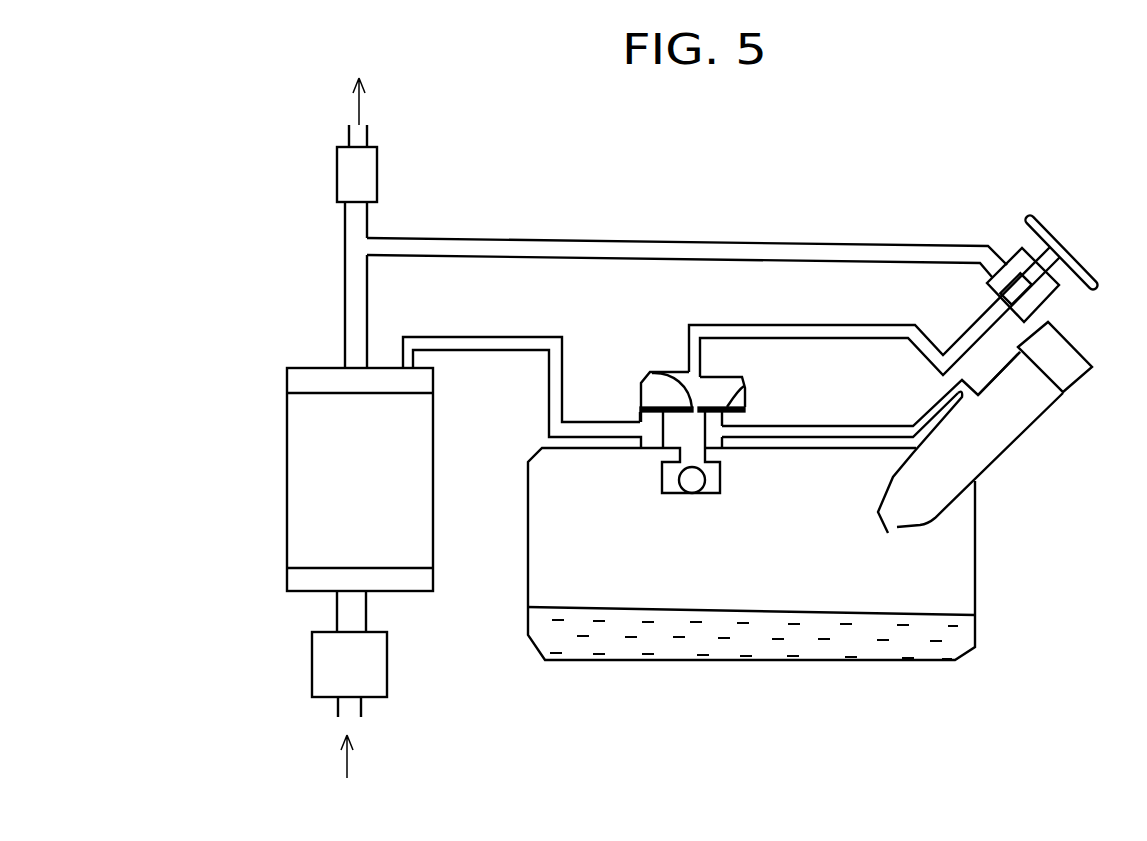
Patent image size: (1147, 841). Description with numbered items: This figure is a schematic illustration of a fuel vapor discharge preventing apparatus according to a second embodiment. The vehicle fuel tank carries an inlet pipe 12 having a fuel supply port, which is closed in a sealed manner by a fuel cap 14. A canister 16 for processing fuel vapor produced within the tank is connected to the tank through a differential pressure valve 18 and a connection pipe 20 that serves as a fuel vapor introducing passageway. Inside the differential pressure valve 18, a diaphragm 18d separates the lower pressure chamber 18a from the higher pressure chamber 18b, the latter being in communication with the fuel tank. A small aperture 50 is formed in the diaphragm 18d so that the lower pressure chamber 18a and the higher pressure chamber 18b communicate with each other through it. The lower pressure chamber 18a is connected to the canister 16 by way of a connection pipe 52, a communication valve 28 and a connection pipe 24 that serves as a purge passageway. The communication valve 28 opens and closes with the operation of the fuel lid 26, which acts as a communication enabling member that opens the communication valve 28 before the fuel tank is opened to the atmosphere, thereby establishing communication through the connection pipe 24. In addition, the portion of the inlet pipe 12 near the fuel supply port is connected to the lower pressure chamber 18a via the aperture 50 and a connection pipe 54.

The inlet pipe 12 is at (1007, 445).
The fuel cap 14 is at (1088, 380).
The canister 16 is at (287, 528).
The differential pressure valve 18 is at (706, 397).
The lower pressure chamber 18a is at (717, 383).
The higher pressure chamber 18b is at (707, 427).
The diaphragm 18d is at (743, 393).
The connection pipe 20 is at (497, 337).
The connection pipe 24 is at (789, 245).
The fuel lid 26 is at (1052, 235).
The communication valve 28 is at (1007, 231).
The aperture 50 is at (652, 376).
The connection pipe 52 is at (792, 326).
The connection pipe 54 is at (872, 427).